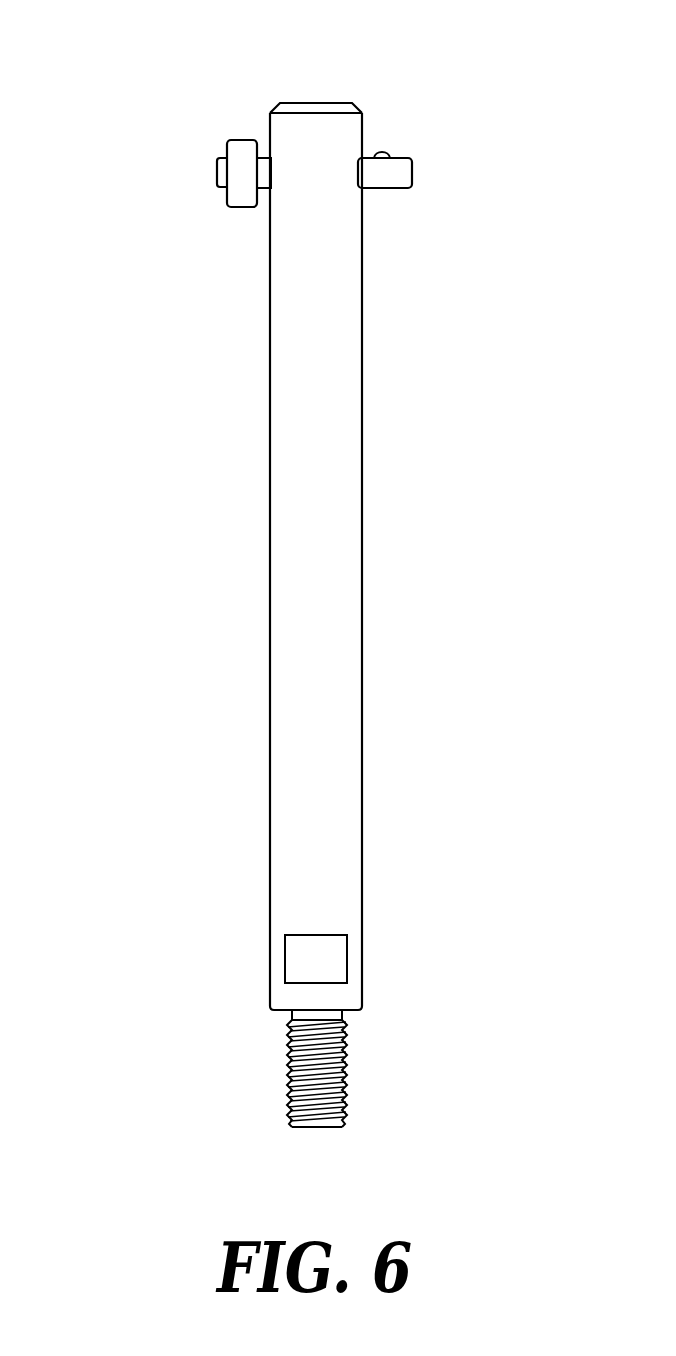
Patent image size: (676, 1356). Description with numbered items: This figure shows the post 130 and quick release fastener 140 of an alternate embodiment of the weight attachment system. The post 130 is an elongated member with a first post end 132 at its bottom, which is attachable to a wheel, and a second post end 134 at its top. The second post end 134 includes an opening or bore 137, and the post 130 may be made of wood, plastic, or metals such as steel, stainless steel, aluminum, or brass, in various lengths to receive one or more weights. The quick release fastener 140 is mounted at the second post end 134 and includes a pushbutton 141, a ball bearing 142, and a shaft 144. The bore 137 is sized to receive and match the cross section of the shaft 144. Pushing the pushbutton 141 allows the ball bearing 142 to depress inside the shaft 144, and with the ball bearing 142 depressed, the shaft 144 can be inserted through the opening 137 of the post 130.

The post 130 is at (362, 793).
The first post end 132 is at (347, 1072).
The second post end 134 is at (317, 102).
The bore 137 is at (257, 196).
The quick release fastener 140 is at (412, 172).
The pushbutton 141 is at (207, 172).
The ball bearing 142 is at (383, 152).
The shaft 144 is at (377, 190).